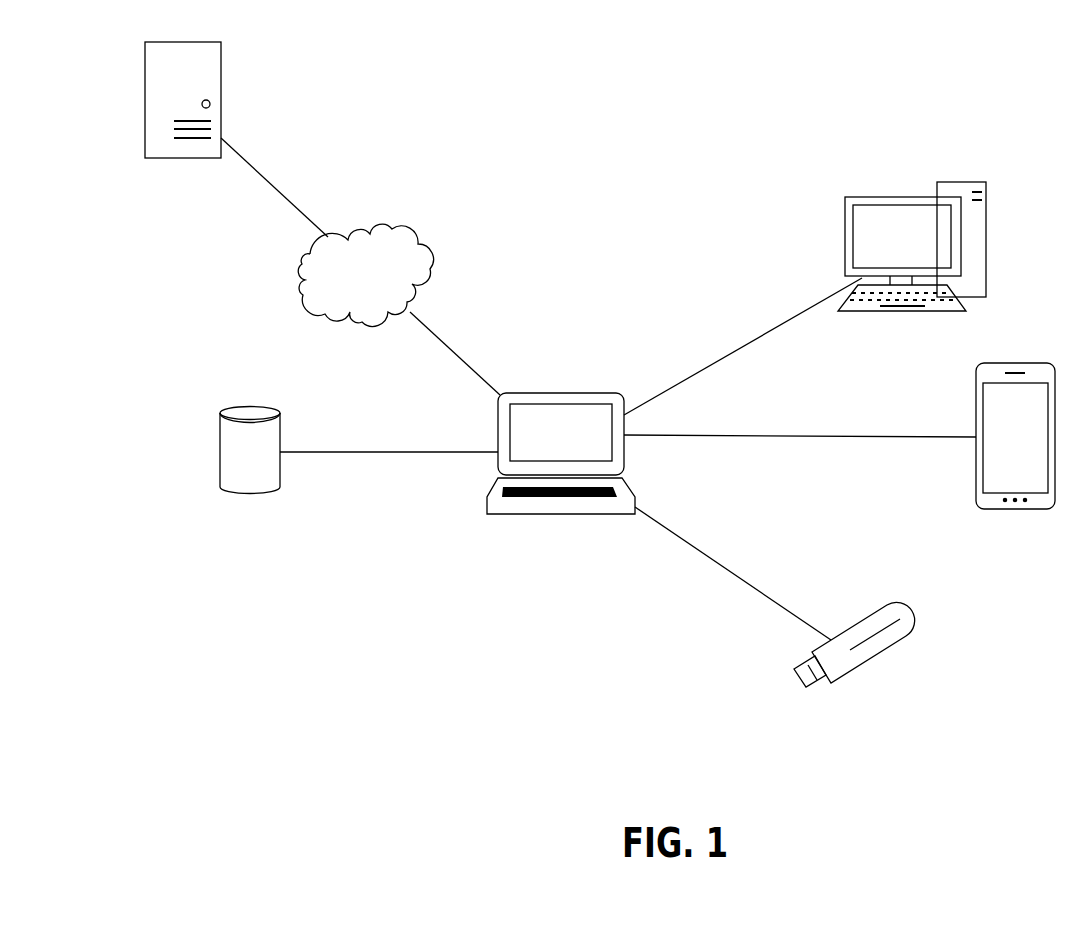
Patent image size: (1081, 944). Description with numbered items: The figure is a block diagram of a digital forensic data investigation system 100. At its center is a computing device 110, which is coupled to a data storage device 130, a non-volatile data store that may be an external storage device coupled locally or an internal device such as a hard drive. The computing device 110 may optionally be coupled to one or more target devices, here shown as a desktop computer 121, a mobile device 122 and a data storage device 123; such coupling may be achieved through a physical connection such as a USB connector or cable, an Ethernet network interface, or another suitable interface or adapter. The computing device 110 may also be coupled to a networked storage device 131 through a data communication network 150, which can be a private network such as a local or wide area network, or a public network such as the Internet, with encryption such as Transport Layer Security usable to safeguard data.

The data investigation system 100 is at (664, 112).
The computing device 110 is at (573, 514).
The desktop computer 121 is at (902, 311).
The mobile device 122 is at (1015, 509).
The data storage device 123 is at (866, 661).
The data storage device 130 is at (250, 495).
The networked storage device 131 is at (173, 158).
The data communication network 150 is at (365, 329).